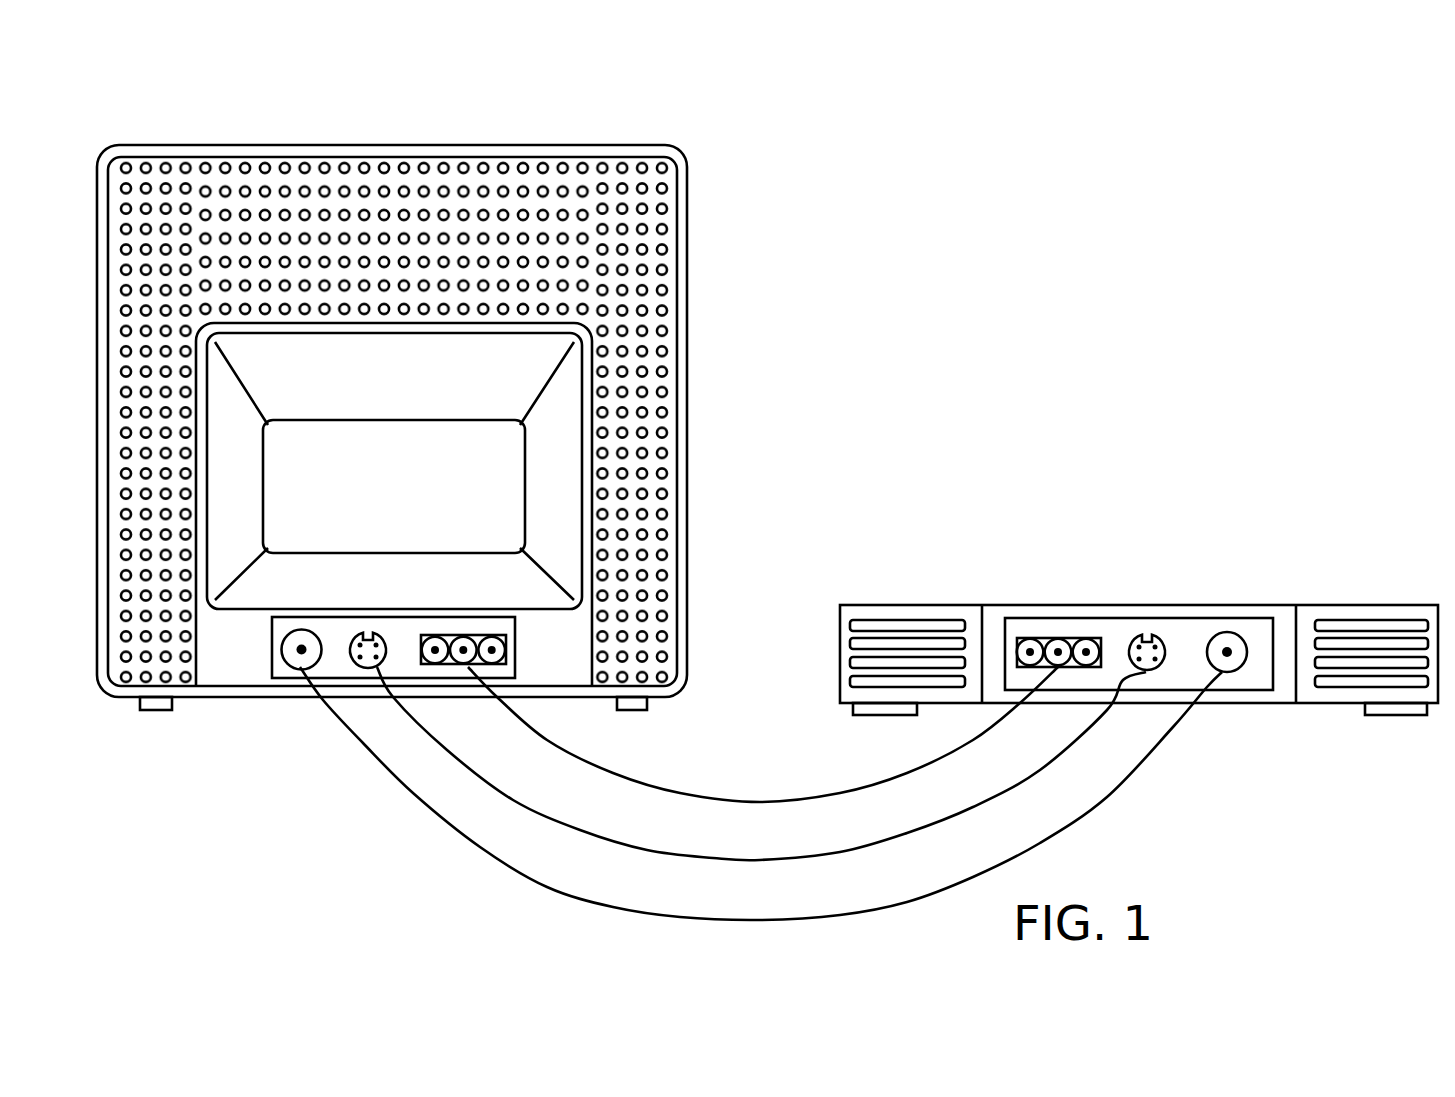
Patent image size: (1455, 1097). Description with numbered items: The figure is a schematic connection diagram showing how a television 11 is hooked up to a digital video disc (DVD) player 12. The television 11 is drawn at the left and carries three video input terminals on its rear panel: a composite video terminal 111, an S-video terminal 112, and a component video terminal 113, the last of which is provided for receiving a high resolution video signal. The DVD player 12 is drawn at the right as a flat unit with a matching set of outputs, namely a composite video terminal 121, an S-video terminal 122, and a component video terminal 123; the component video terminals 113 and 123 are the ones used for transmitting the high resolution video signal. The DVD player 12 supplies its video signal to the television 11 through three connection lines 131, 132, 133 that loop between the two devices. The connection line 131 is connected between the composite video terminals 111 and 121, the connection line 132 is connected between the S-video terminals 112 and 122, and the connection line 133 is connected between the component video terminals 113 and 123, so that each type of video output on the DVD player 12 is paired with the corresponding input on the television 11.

The television 11 is at (547, 145).
The composite video terminal 111 is at (303, 630).
The S-video terminal 112 is at (388, 633).
The component video terminal 113 is at (462, 637).
The DVD player 12 is at (1375, 605).
The composite video terminal 121 is at (1242, 632).
The S-video terminal 122 is at (1162, 633).
The component video terminal 123 is at (1046, 637).
The connection line 131 is at (840, 914).
The connection line 132 is at (780, 856).
The connection line 133 is at (727, 800).